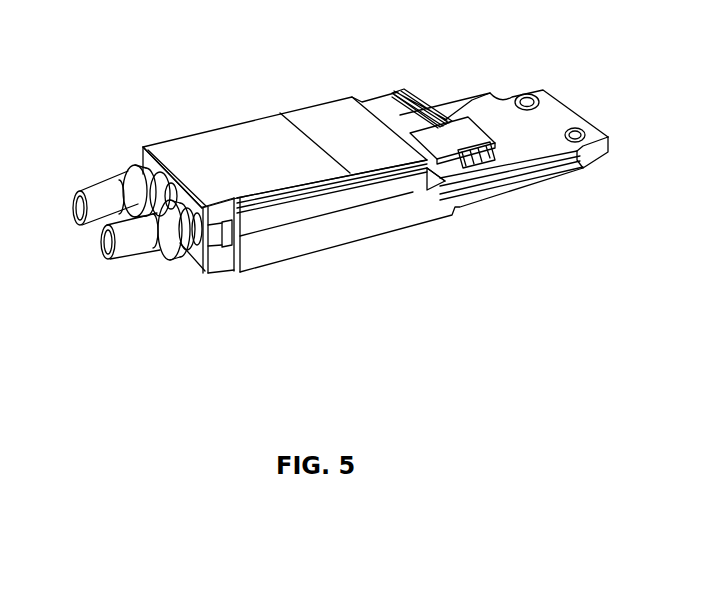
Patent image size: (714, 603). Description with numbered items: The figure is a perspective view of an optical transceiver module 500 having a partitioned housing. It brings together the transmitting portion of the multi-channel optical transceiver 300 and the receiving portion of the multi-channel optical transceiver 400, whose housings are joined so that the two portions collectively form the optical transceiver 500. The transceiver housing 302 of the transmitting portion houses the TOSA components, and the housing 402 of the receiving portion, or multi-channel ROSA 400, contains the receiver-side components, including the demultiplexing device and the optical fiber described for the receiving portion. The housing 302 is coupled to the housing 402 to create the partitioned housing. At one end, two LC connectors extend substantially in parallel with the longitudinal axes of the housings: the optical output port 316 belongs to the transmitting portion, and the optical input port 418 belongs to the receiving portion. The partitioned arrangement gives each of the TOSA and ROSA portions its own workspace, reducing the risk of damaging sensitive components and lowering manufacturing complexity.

The optical transceiver module 500 is at (136, 84).
The multi-channel optical transceiver 300 is at (352, 244).
The transceiver housing 302 is at (407, 219).
The multi-channel optical transceiver 400 is at (320, 92).
The housing 402 is at (262, 117).
The optical input port 418 is at (103, 193).
The optical output port 316 is at (124, 254).